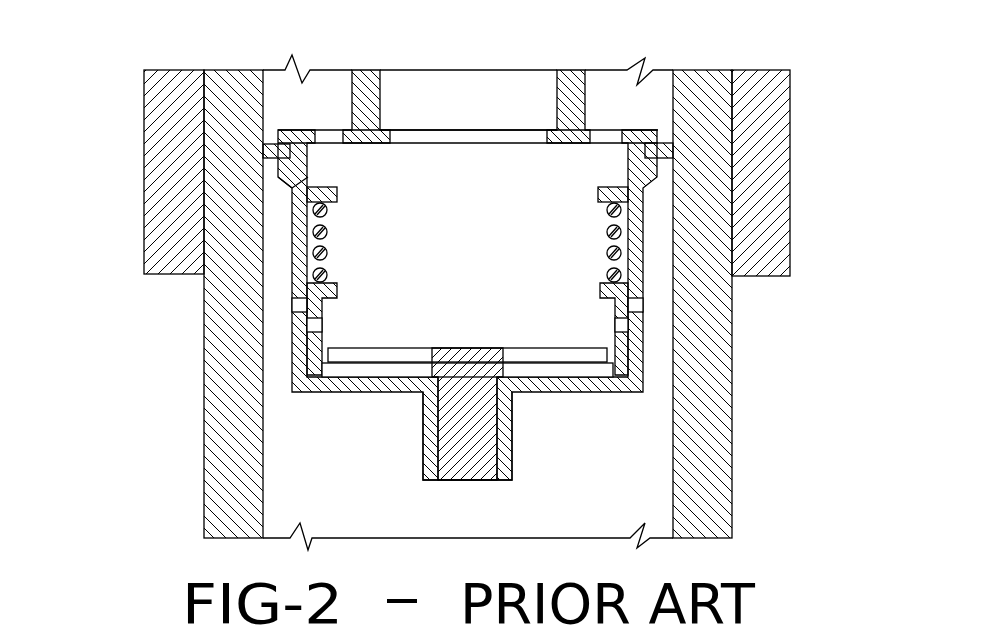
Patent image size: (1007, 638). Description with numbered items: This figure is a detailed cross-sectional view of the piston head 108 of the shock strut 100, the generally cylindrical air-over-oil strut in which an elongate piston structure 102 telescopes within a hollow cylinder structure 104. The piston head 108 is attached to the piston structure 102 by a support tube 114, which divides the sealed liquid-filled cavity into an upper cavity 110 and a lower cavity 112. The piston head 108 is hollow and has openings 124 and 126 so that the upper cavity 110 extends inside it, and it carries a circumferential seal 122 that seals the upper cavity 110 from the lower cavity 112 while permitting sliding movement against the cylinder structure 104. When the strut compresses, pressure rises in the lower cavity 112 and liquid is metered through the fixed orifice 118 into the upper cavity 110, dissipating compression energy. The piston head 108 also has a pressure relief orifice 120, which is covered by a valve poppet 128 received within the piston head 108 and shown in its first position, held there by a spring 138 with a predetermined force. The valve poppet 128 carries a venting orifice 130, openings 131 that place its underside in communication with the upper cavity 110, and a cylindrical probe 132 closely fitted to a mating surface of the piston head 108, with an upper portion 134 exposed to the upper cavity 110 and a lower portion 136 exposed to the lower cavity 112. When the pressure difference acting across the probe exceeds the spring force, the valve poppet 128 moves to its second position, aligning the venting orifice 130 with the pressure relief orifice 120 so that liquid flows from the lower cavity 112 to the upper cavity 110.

The shock strut 100 is at (131, 126).
The piston structure 102 is at (790, 152).
The cylinder structure 104 is at (733, 452).
The piston head 108 is at (645, 331).
The upper cavity 110 is at (444, 108).
The lower cavity 112 is at (583, 485).
The support tube 114 is at (572, 70).
The fixed orifice 118 is at (296, 176).
The pressure relief orifice 120 is at (300, 305).
The circumferential seal 122 is at (265, 143).
The opening 124 is at (608, 135).
The opening 126 is at (480, 141).
The valve poppet 128 is at (598, 290).
The venting orifice 130 is at (318, 328).
The openings 131 is at (398, 358).
The cylindrical probe 132 is at (498, 430).
The upper portion 134 is at (466, 350).
The lower portion 136 is at (455, 481).
The spring 138 is at (326, 252).